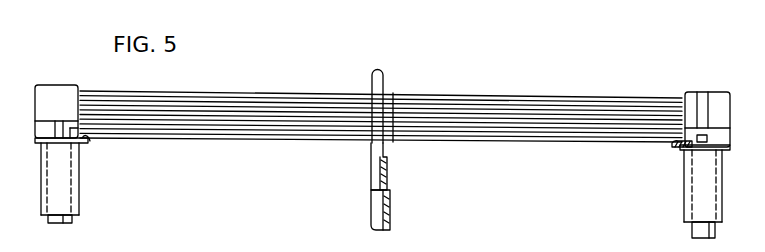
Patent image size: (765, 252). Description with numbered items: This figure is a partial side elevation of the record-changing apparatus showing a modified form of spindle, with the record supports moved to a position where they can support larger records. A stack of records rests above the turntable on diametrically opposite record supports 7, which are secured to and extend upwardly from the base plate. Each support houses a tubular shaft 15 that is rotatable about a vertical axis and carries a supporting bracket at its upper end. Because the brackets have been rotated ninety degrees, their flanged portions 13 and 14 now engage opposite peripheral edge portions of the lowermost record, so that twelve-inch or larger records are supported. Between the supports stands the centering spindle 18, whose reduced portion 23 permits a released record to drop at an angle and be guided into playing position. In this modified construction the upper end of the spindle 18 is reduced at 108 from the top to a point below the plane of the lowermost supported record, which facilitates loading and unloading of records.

The record support 7 is at (80, 193).
The flanged portion 13 is at (86, 138).
The flanged portion 14 is at (672, 146).
The tubular shaft 15 is at (72, 218).
The centering spindle 18 is at (391, 213).
The reduced portion 23 is at (388, 171).
The reduced upper end 108 is at (384, 77).